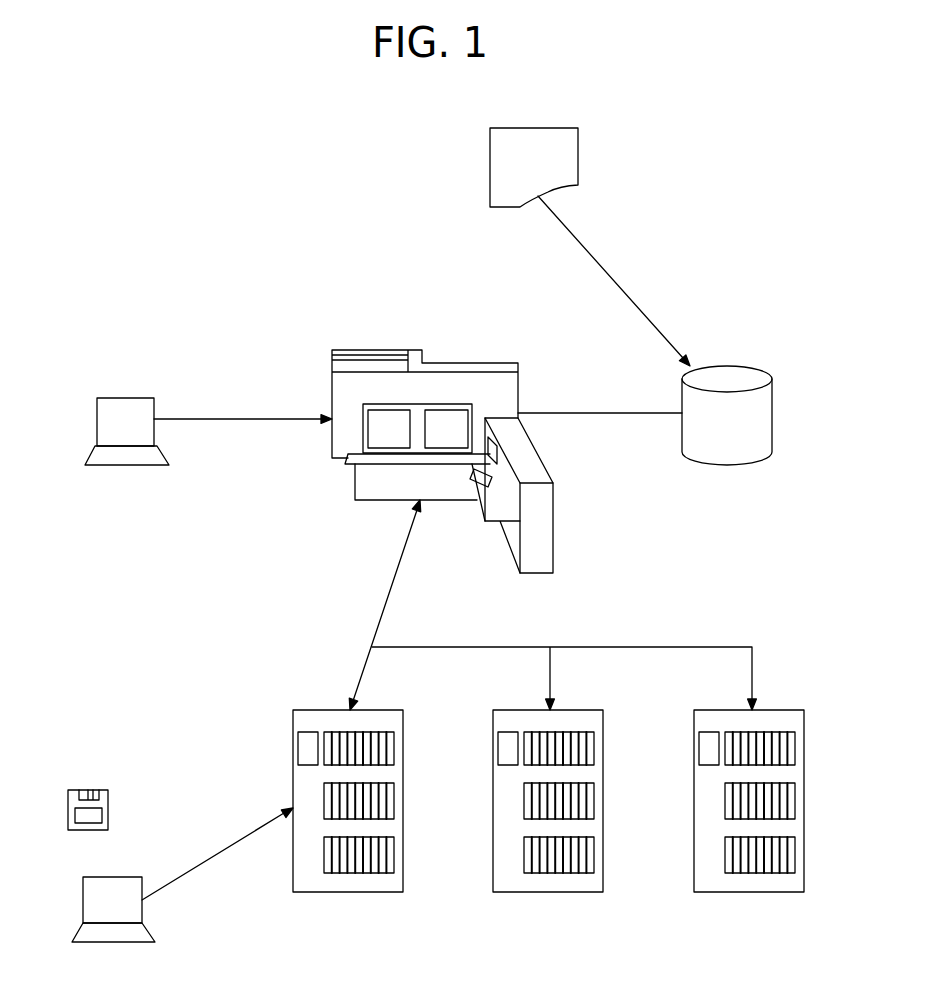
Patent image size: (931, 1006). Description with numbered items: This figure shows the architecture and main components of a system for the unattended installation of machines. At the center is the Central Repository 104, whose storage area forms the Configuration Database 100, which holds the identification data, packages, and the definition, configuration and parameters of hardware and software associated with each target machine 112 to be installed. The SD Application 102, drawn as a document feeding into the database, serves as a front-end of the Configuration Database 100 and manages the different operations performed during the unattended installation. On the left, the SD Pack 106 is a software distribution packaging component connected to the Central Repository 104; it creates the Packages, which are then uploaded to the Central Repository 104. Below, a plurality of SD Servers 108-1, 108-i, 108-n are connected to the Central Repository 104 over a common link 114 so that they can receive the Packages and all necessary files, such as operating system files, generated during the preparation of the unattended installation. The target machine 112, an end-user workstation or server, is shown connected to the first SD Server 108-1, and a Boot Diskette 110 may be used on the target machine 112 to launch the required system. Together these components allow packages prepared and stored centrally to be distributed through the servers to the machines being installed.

The Configuration Database 100 is at (772, 420).
The SD Application 102 is at (563, 128).
The Central Repository 104 is at (553, 483).
The SD Pack 106 is at (143, 398).
The SD Server 108-1 is at (292, 742).
The SD Server 108-i is at (493, 742).
The SD Server 108-n is at (694, 742).
The Boot Diskette 110 is at (90, 790).
The target machine 112 is at (103, 877).
The network / bus 114 is at (683, 647).